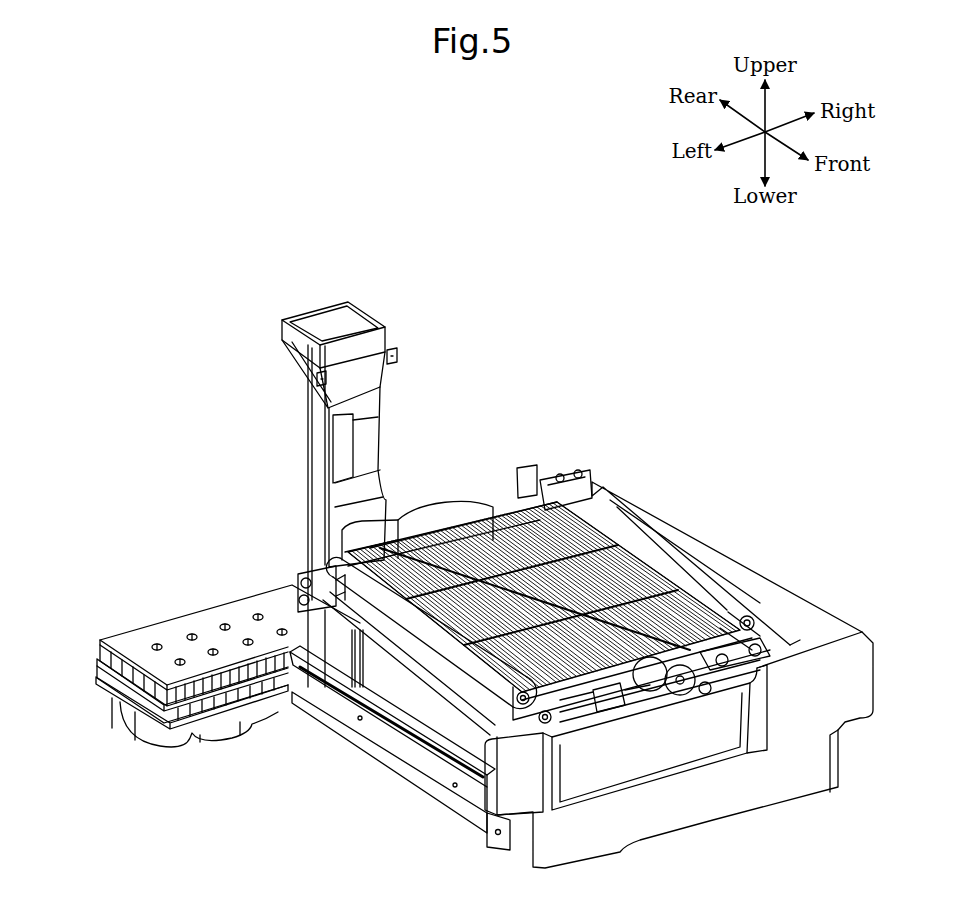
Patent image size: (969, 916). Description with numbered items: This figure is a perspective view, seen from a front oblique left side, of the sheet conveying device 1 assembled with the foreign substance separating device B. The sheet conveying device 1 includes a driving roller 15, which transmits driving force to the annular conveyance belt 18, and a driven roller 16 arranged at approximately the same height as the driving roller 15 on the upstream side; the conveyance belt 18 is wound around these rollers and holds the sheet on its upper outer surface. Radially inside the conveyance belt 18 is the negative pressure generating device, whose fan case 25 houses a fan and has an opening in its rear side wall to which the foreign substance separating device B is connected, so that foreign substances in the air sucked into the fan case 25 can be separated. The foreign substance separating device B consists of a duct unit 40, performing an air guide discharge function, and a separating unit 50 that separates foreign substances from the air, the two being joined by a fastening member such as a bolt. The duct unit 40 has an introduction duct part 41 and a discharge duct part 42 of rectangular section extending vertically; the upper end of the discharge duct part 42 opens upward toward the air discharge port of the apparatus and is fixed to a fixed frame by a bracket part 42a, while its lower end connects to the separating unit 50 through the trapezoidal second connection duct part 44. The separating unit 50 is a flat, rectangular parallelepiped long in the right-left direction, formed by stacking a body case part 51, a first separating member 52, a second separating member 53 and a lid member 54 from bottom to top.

The sheet conveying device 1 is at (560, 442).
The driving roller 15 is at (455, 648).
The driven roller 16 is at (722, 585).
The conveyance belt 18 is at (650, 573).
The fan case 25 is at (580, 690).
The duct unit 40 is at (295, 463).
The introduction duct part 41 is at (437, 510).
The discharge duct part 42 is at (313, 320).
The bracket part 42a is at (327, 380).
The second connection duct part 44 is at (297, 590).
The separating unit 50 is at (230, 591).
The body case part 51 is at (113, 700).
The first separating member 52 is at (98, 670).
The second separating member 53 is at (107, 652).
The lid member 54 is at (143, 637).
The foreign substance separating device B is at (222, 342).